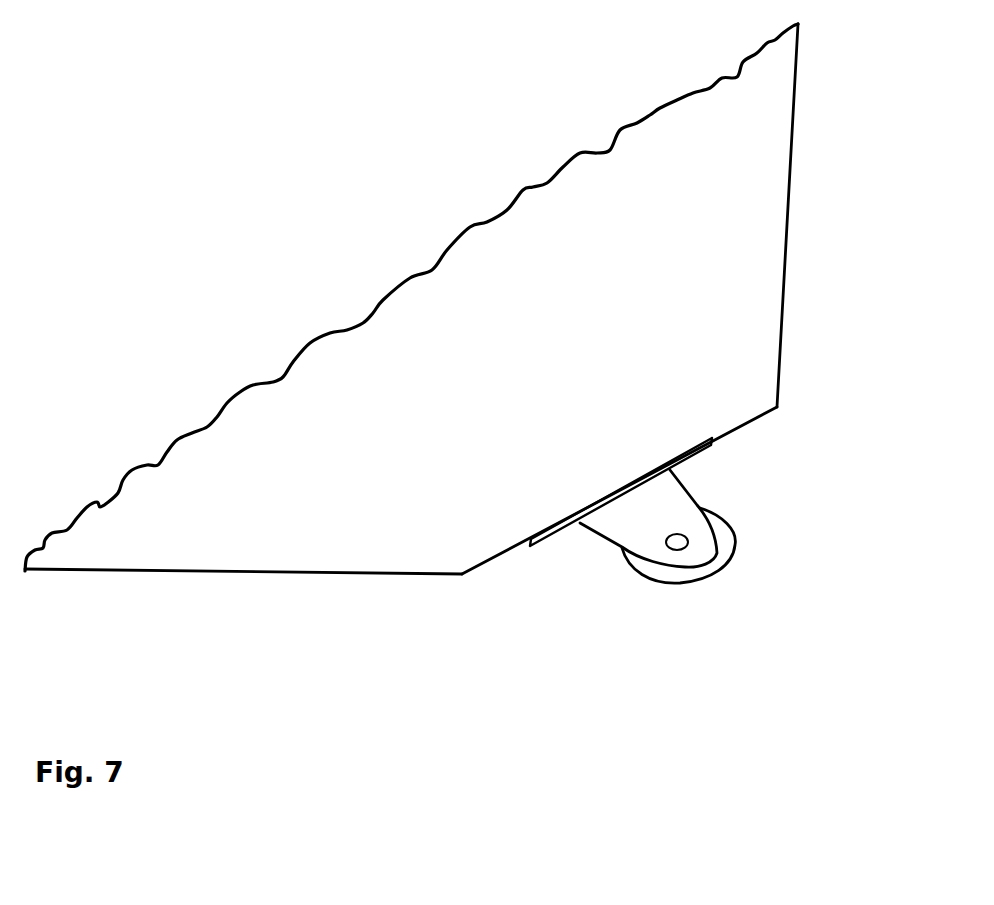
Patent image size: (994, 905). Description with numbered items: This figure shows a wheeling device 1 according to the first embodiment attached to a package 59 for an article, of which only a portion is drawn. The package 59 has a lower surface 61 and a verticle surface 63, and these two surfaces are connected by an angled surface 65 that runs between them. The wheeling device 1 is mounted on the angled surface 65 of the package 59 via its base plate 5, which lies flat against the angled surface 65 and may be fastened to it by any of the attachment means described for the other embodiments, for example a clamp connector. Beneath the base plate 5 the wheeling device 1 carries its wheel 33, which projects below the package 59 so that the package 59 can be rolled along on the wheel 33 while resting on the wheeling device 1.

The wheeling device 1 is at (579, 556).
The base plate 5 is at (687, 462).
The caster wheel 33 is at (713, 565).
The package 59 is at (407, 300).
The lower surface 61 is at (243, 574).
The verticle surface 63 is at (789, 203).
The angled surface 65 is at (744, 428).